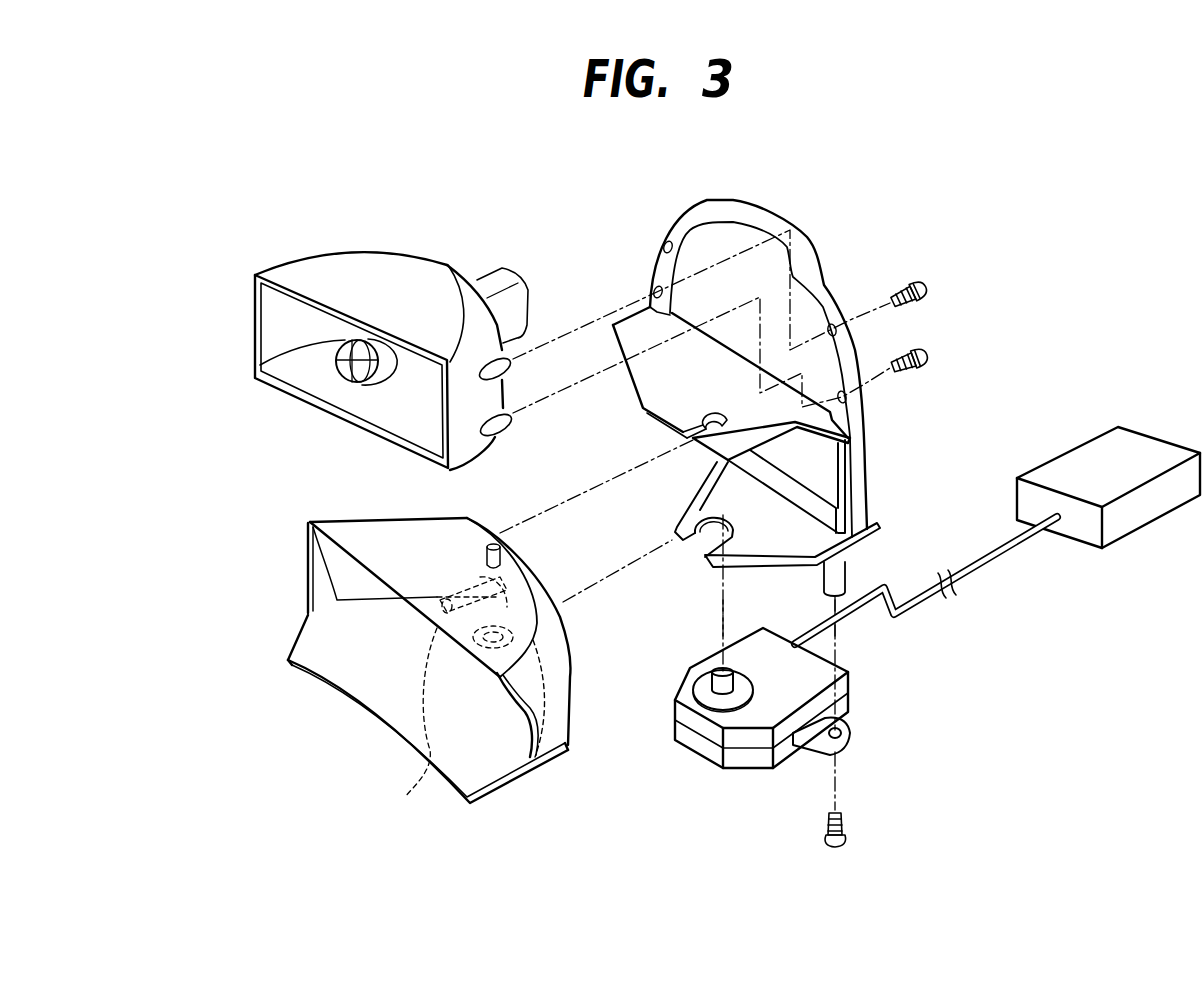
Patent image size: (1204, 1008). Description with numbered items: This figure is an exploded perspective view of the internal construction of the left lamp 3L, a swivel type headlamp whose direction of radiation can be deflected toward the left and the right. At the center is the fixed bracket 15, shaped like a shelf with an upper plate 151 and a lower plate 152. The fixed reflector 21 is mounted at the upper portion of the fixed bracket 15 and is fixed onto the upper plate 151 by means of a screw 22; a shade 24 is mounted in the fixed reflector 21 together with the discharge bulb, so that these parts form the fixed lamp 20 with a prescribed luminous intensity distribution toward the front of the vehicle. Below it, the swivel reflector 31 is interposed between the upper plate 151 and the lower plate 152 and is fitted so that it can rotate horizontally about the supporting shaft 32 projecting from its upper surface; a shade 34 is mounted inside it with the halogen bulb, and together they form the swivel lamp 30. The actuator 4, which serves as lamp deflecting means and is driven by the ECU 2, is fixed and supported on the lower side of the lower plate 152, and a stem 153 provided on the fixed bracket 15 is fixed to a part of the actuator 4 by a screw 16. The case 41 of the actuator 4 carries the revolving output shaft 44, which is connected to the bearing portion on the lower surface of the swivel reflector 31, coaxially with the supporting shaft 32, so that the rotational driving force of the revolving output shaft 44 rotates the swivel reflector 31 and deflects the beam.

The left lamp 3L is at (928, 193).
The fixed lamp 20 is at (362, 321).
The fixed reflector 21 is at (393, 263).
The shade 24 is at (362, 383).
The swivel lamp 30 is at (414, 632).
The swivel reflector 31 is at (375, 530).
The supporting shaft 32 is at (493, 544).
The shade 34 is at (445, 695).
The fixed bracket 15 is at (721, 402).
The upper plate 151 is at (647, 373).
The lower plate 152 is at (698, 508).
The stem 153 is at (828, 583).
The screw 22 is at (925, 283).
The ECU 2 is at (1088, 452).
The actuator 4 is at (782, 732).
The case 41 is at (748, 762).
The revolving output shaft 44 is at (702, 697).
The screw 16 is at (850, 830).